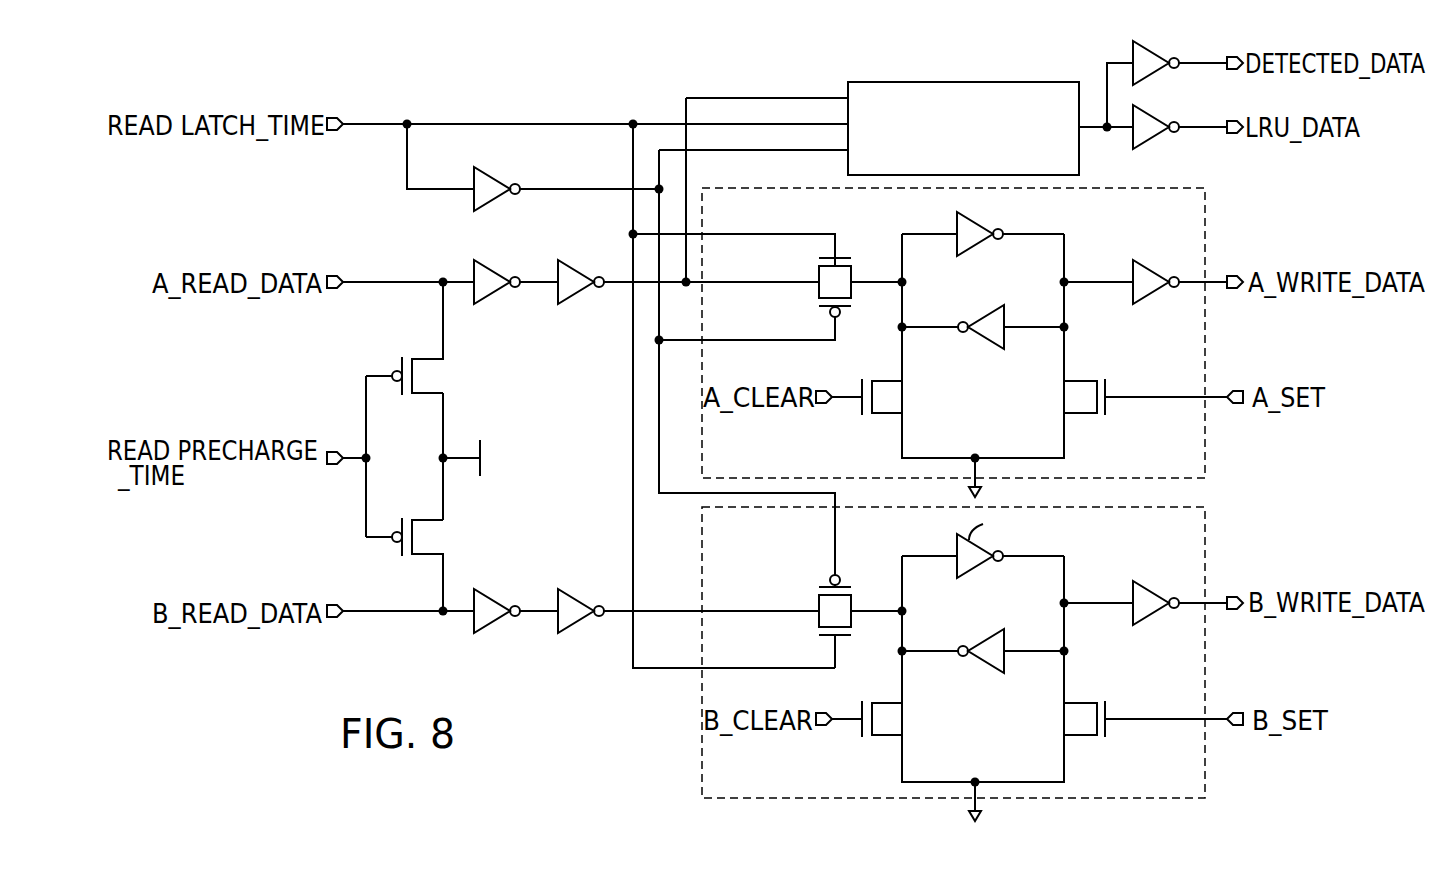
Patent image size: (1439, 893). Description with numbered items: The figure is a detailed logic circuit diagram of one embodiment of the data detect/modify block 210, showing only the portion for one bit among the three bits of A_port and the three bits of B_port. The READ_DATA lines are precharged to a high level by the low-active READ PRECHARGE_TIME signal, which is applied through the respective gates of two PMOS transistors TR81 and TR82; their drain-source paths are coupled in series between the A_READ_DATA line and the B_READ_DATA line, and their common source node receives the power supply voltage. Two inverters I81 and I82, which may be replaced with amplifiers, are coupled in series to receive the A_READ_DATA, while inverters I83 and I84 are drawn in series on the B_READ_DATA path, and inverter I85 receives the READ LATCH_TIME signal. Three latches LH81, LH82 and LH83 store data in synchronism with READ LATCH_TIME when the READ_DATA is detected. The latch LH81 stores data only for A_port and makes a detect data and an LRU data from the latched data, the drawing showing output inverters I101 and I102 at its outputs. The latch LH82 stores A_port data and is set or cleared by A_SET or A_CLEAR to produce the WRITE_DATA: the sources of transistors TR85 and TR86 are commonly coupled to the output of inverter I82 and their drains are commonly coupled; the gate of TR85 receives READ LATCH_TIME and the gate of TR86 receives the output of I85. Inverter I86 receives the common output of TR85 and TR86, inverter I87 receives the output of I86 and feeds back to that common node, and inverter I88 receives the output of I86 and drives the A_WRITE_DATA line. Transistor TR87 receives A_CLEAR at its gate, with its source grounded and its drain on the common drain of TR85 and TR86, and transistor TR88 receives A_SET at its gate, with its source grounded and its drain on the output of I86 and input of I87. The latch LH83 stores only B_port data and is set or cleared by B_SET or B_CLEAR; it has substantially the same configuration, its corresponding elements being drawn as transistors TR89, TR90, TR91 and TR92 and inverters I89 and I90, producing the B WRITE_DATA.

The data detect/modify block 210 is at (638, 78).
The latch LH81 is at (966, 80).
The latch LH82 is at (1207, 214).
The latch LH83 is at (1207, 531).
The inverter I81 is at (486, 266).
The inverter I82 is at (570, 266).
The inverter I83 is at (486, 595).
The inverter I84 is at (570, 595).
The inverter I85 is at (486, 173).
The inverter I86 is at (969, 218).
The inverter I87 is at (992, 311).
The inverter I88 is at (1145, 266).
The inverter I89 is at (992, 635).
The inverter I90 is at (1145, 587).
The inverter I101 is at (1145, 47).
The inverter I102 is at (1145, 111).
The PMOS transistor TR81 is at (422, 396).
The PMOS transistor TR82 is at (422, 556).
The MOS transistor TR85 is at (817, 268).
The MOS transistor TR86 is at (817, 298).
The MOS transistor TR87 is at (884, 415).
The MOS transistor TR88 is at (1090, 415).
The transfer gate transistor TR89 is at (817, 627).
The transfer gate transistor TR90 is at (817, 597).
The clear NMOS transistor TR91 is at (884, 738).
The set NMOS transistor TR92 is at (1090, 738).